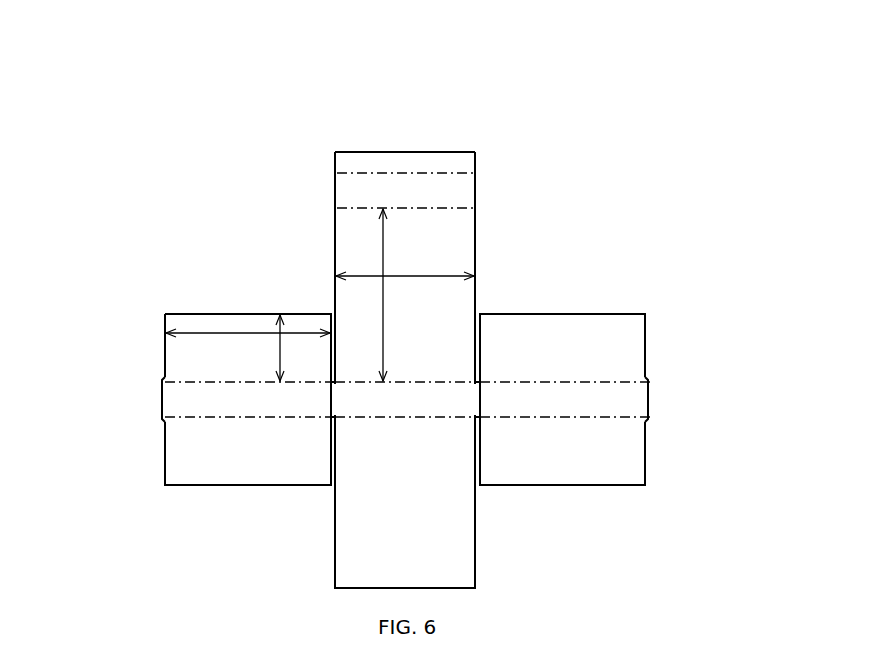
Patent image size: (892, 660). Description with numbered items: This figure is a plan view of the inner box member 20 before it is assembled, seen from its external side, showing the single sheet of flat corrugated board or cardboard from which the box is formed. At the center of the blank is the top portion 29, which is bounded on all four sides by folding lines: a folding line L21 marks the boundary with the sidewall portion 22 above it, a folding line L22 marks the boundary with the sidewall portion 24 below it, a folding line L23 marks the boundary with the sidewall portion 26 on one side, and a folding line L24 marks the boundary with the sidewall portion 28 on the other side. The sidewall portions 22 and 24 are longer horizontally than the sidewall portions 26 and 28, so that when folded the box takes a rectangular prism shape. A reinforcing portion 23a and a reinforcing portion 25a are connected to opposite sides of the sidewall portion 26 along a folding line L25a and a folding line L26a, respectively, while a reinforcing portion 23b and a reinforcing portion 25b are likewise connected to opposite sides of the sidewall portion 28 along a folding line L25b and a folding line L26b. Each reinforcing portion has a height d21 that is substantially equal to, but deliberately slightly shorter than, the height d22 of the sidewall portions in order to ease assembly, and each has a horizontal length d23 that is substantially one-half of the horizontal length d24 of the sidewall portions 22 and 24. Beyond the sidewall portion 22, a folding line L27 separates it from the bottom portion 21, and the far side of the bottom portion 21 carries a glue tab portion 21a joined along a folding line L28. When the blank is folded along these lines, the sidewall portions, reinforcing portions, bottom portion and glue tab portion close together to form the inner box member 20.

The inner box member 20 is at (474, 81).
The bottom portion 21 is at (453, 192).
The glue tab portion 21a is at (453, 163).
The sidewall portion 22 is at (460, 243).
The sidewall portion 24 is at (412, 529).
The reinforcing portion 23a is at (177, 357).
The reinforcing portion 23b is at (635, 355).
The reinforcing portion 25a is at (172, 452).
The reinforcing portion 25b is at (635, 450).
The sidewall portion 26 is at (172, 398).
The sidewall portion 28 is at (635, 395).
The top portion 29 is at (371, 396).
The folding line L21 is at (462, 380).
The folding line L22 is at (333, 463).
The folding line L23 is at (335, 404).
The folding line L24 is at (476, 402).
The folding line L25a is at (210, 381).
The folding line L25b is at (613, 381).
The folding line L26a is at (193, 418).
The folding line L26b is at (613, 418).
The folding line L27 is at (370, 207).
The folding line L28 is at (432, 172).
The height d21 is at (248, 343).
The height d22 is at (400, 295).
The horizontal length d23 is at (297, 348).
The horizontal length d24 is at (405, 264).